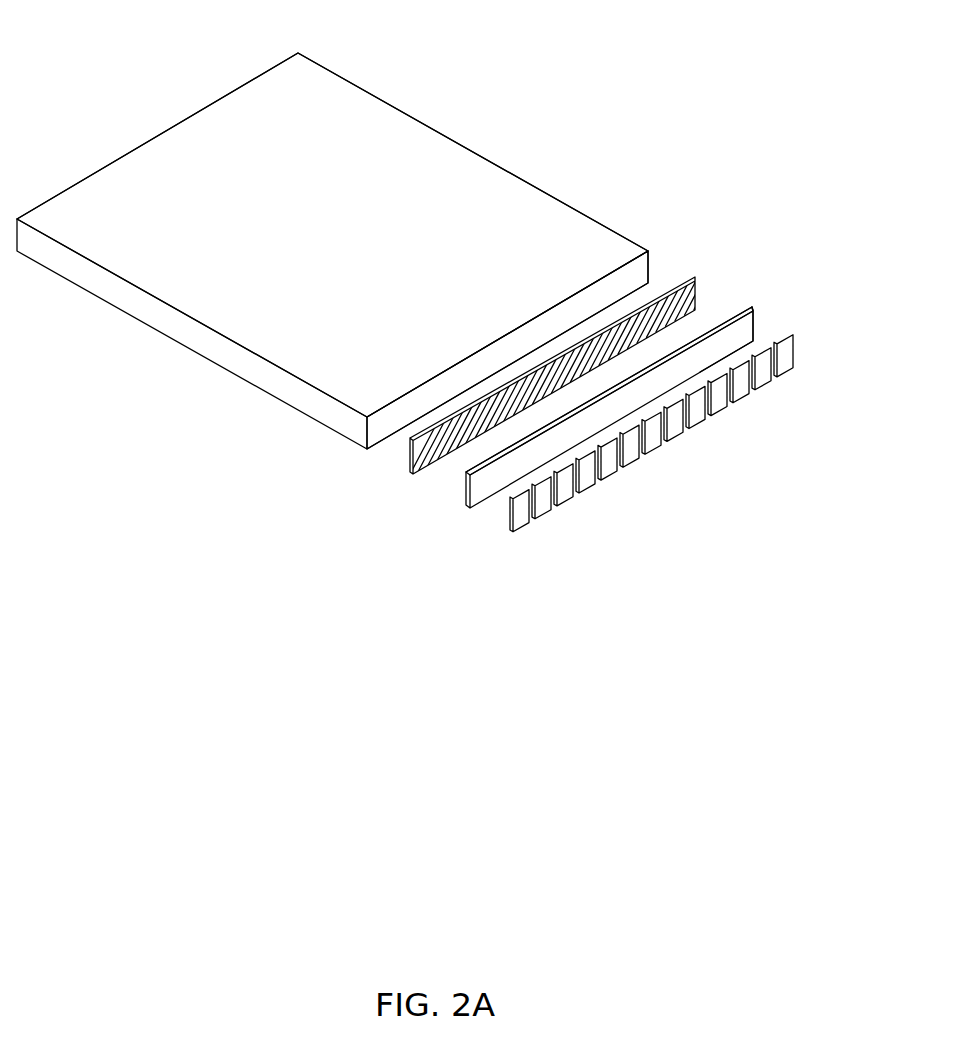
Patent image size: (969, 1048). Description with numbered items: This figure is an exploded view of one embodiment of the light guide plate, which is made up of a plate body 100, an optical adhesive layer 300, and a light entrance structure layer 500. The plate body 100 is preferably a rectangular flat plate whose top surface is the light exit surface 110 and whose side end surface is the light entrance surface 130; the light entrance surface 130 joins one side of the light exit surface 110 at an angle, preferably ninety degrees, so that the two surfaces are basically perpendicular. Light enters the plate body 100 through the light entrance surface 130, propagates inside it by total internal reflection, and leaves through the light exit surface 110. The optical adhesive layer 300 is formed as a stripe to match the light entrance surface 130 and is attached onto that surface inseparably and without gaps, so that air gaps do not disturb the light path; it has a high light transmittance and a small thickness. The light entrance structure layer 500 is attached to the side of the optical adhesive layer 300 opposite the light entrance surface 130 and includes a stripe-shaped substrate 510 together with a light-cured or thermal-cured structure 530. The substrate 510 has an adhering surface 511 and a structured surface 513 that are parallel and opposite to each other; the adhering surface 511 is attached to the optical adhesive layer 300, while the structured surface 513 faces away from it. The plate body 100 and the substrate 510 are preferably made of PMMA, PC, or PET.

The plate body 100 is at (227, 350).
The light exit surface 110 is at (452, 150).
The light entrance surface 130 is at (650, 284).
The optical adhesive layer 300 is at (680, 297).
The light entrance structure layer 500 is at (553, 471).
The substrate 510 is at (467, 497).
The adhering surface 511 is at (455, 471).
The structured surface 513 is at (757, 342).
The light-cured or thermal-cured structure 530 is at (518, 513).